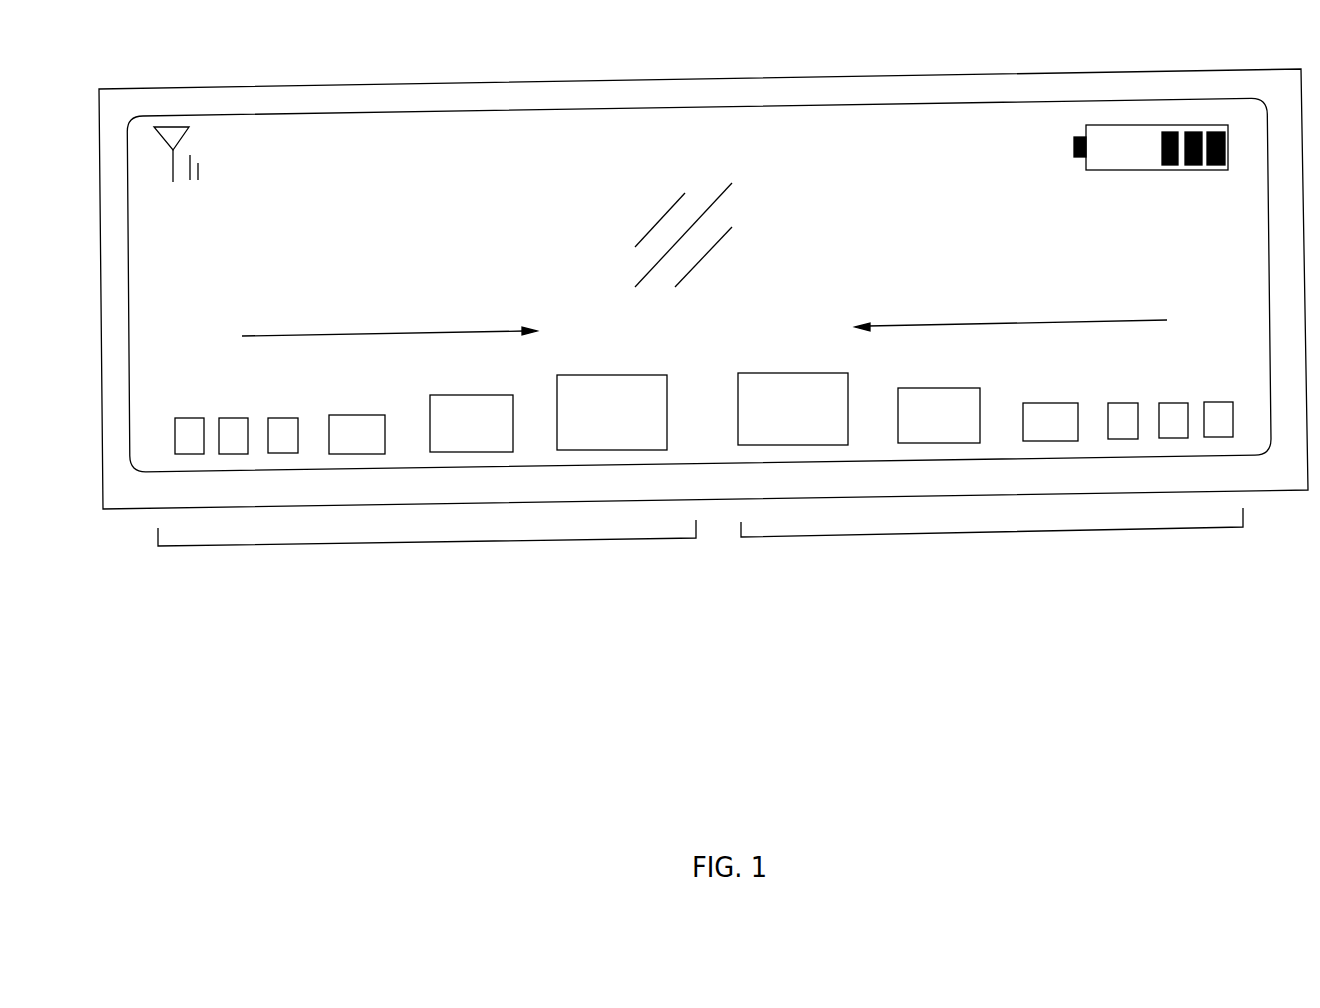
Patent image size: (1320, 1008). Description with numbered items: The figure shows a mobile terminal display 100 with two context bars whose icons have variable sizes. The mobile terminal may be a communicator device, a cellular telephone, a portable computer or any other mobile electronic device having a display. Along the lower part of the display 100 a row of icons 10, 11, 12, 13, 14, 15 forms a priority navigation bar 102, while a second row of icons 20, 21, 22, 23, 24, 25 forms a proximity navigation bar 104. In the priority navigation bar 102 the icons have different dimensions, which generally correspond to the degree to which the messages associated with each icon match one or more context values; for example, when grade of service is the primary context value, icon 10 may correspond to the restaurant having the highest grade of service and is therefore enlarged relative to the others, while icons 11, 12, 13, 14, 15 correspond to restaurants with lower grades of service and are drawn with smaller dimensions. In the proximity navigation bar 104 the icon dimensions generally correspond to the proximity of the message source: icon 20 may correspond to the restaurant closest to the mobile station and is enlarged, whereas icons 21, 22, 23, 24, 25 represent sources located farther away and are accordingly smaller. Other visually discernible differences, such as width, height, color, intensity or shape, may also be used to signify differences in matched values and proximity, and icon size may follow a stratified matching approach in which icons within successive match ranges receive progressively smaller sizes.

The mobile terminal display 100 is at (485, 165).
The priority navigation bar 102 is at (413, 541).
The proximity navigation bar 104 is at (1013, 532).
The icon 10 is at (601, 421).
The icon 11 is at (460, 433).
The icon 12 is at (346, 443).
The icon 13 is at (284, 443).
The icon 14 is at (230, 448).
The icon 15 is at (193, 450).
The icon 20 is at (782, 417).
The icon 21 is at (928, 427).
The icon 22 is at (1039, 431).
The icon 23 is at (1123, 431).
The icon 24 is at (1172, 428).
The icon 25 is at (1220, 427).